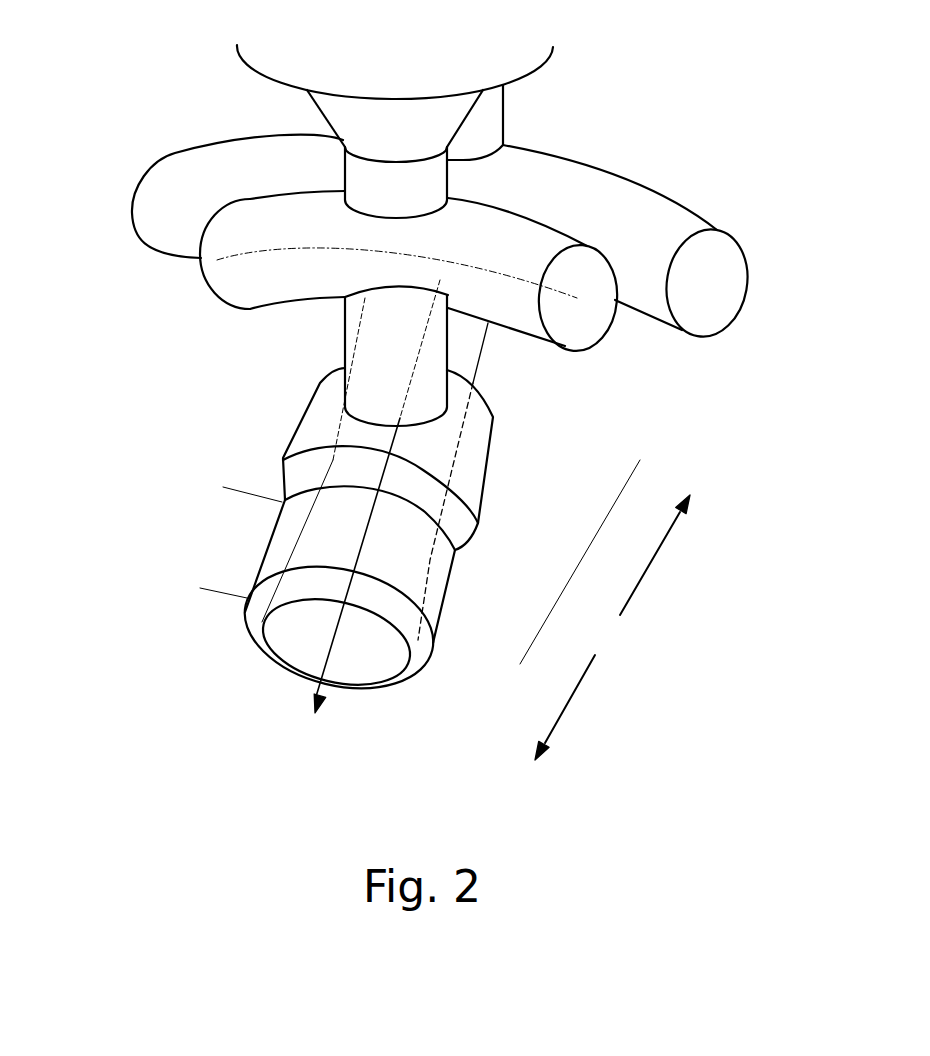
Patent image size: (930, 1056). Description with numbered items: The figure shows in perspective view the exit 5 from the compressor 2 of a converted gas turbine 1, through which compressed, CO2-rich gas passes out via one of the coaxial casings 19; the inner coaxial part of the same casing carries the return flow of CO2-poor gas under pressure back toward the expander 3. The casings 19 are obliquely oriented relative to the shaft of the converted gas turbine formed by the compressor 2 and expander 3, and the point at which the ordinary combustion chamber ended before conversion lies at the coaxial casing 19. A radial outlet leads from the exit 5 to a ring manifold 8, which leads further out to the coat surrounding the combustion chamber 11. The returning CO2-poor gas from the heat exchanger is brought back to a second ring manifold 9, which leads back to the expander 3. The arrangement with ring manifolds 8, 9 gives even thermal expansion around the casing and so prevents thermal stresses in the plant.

The converted gas turbine 1 is at (612, 627).
The compressor 2 is at (587, 547).
The expander 3 is at (125, 218).
The exit from the compressor 5 is at (182, 250).
The ring manifold 8 is at (268, 300).
The ring manifold 9 is at (205, 145).
The combustion chamber 11 is at (397, 120).
The coaxial casing 19 is at (232, 493).